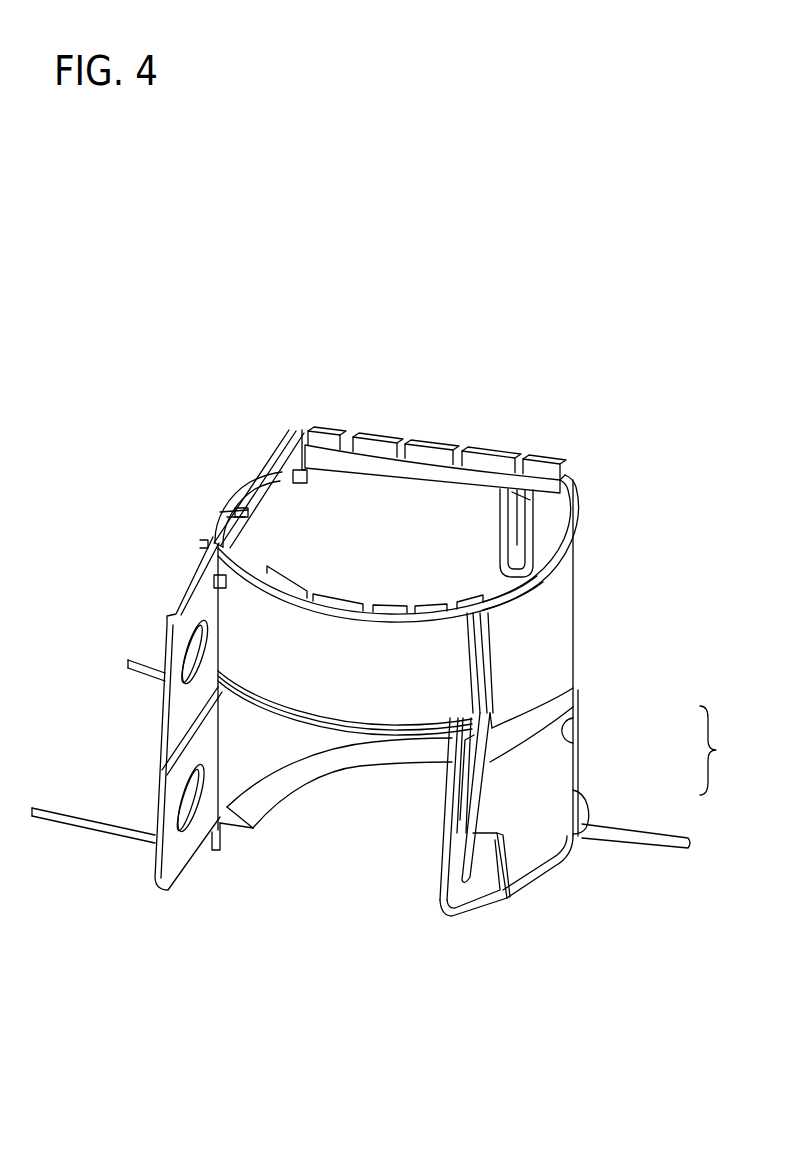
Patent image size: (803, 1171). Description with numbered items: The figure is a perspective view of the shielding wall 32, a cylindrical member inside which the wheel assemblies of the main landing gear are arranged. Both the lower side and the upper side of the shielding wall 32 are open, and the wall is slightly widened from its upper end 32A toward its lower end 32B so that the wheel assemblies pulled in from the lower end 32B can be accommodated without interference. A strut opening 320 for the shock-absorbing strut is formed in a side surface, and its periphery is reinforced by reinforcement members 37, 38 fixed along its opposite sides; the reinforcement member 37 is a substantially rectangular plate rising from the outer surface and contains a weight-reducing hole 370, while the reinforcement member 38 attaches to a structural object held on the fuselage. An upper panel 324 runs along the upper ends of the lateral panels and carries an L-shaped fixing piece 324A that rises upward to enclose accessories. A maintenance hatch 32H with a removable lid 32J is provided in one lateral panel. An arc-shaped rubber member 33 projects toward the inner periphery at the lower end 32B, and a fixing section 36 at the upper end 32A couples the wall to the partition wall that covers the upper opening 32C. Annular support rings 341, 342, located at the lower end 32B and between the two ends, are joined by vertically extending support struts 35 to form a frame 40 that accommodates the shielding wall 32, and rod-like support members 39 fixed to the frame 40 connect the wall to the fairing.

The shielding wall 32 is at (577, 555).
The upper end 32A is at (557, 525).
The lower end 32B is at (520, 890).
The upper opening 32C is at (515, 592).
The maintenance hatch 32H is at (497, 525).
The lid 32J is at (512, 497).
The rubber member 33 is at (360, 770).
The support struts 35 is at (577, 770).
The fixing section 36 is at (345, 605).
The reinforcement member 37 is at (152, 858).
The reinforcement member 38 is at (555, 868).
The rod-like support members 39 is at (60, 808).
The frame 40 is at (722, 750).
The strut opening 320 is at (298, 728).
The upper panel 324 is at (232, 496).
The fixing piece 324A is at (340, 458).
The support ring 341 is at (582, 840).
The support ring 342 is at (577, 743).
The hole 370 is at (185, 803).